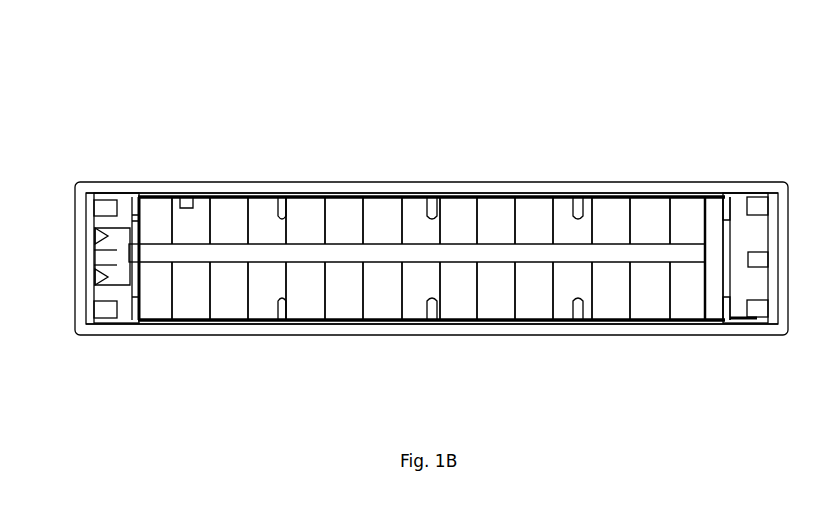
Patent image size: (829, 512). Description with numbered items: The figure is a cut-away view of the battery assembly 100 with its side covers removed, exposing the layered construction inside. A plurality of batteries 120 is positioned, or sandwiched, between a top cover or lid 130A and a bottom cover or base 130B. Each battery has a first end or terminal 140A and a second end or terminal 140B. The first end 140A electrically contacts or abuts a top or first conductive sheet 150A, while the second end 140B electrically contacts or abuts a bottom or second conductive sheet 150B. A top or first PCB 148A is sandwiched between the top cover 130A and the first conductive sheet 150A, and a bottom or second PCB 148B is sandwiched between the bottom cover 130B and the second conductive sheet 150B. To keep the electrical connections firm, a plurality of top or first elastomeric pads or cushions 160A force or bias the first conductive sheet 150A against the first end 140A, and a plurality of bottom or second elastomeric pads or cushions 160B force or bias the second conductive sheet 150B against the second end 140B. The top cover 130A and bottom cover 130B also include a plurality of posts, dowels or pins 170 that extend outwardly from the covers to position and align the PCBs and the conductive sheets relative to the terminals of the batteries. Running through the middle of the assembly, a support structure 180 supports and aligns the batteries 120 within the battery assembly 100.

The battery assembly 100 is at (155, 76).
The batteries 120 is at (691, 216).
The top cover 130A is at (357, 190).
The bottom cover 130B is at (357, 328).
The first end 140A is at (229, 197).
The second end 140B is at (225, 320).
The first PCB 148A is at (443, 197).
The second PCB 148B is at (443, 320).
The first conductive sheet 150A is at (527, 197).
The second conductive sheet 150B is at (525, 320).
The first elastomeric pads 160A is at (613, 197).
The second elastomeric pads 160B is at (610, 320).
The posts 170 is at (282, 197).
The support structure 180 is at (704, 254).